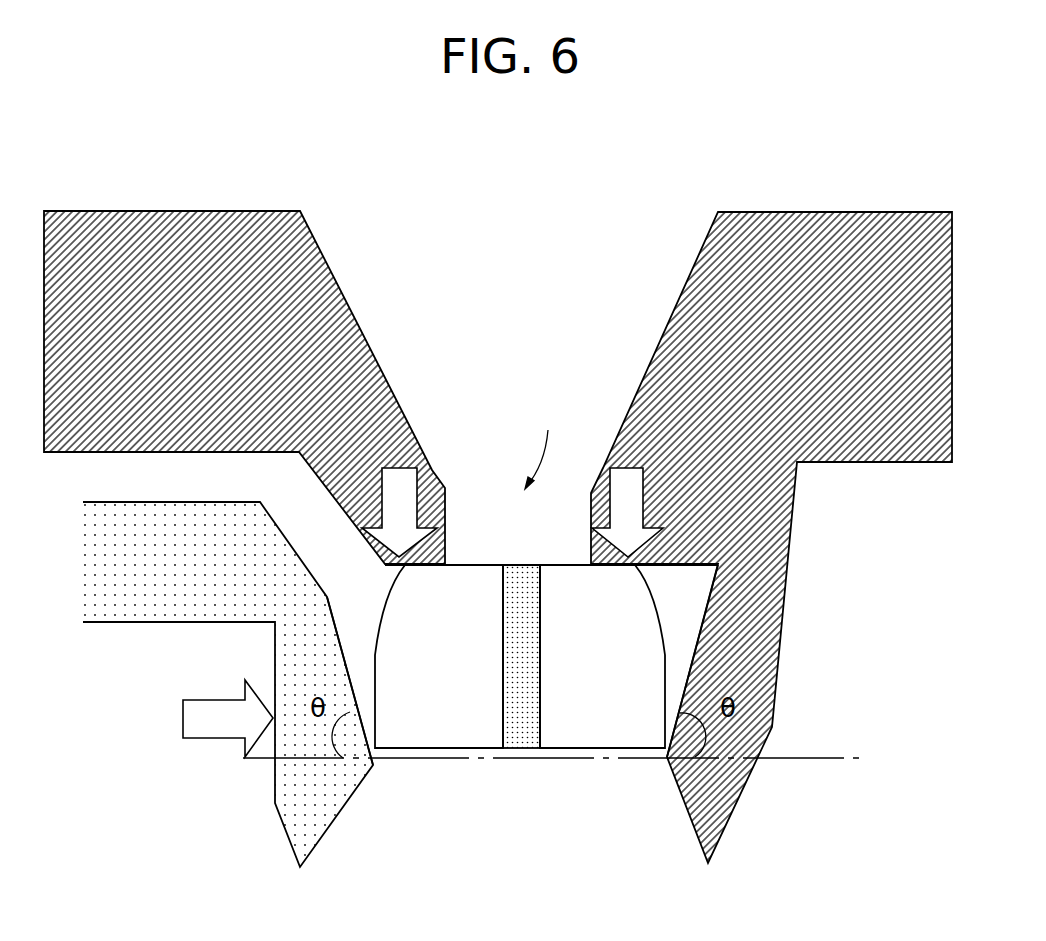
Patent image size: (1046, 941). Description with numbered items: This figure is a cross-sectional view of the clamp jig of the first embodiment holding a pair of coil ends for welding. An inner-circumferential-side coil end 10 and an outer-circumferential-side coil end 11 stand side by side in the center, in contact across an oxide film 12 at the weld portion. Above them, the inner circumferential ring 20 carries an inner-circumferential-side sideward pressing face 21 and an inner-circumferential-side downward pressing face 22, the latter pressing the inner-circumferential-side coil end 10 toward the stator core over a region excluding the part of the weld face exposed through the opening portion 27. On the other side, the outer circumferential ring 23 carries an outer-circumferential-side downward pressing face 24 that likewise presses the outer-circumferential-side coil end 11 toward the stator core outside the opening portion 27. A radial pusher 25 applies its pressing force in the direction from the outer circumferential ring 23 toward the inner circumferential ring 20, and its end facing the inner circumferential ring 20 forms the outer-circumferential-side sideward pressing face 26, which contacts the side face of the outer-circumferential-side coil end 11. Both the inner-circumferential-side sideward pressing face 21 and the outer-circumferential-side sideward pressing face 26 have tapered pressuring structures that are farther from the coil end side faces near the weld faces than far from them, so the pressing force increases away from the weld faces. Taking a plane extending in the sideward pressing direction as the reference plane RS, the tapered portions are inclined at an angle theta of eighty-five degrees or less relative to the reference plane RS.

The inner-circumferential-side coil end 10 is at (597, 732).
The outer-circumferential-side coil end 11 is at (458, 732).
The oxide film 12 is at (523, 733).
The inner circumferential ring 20 is at (873, 237).
The inner-circumferential-side sideward pressing face 21 is at (688, 677).
The inner-circumferential-side downward pressing face 22 is at (658, 567).
The outer circumferential ring 23 is at (183, 230).
The outer-circumferential-side downward pressing face 24 is at (400, 565).
The radial pusher 25 is at (118, 582).
The outer-circumferential-side sideward pressing face 26 is at (353, 684).
The opening portion 27 is at (544, 442).
The reference plane RS is at (572, 758).